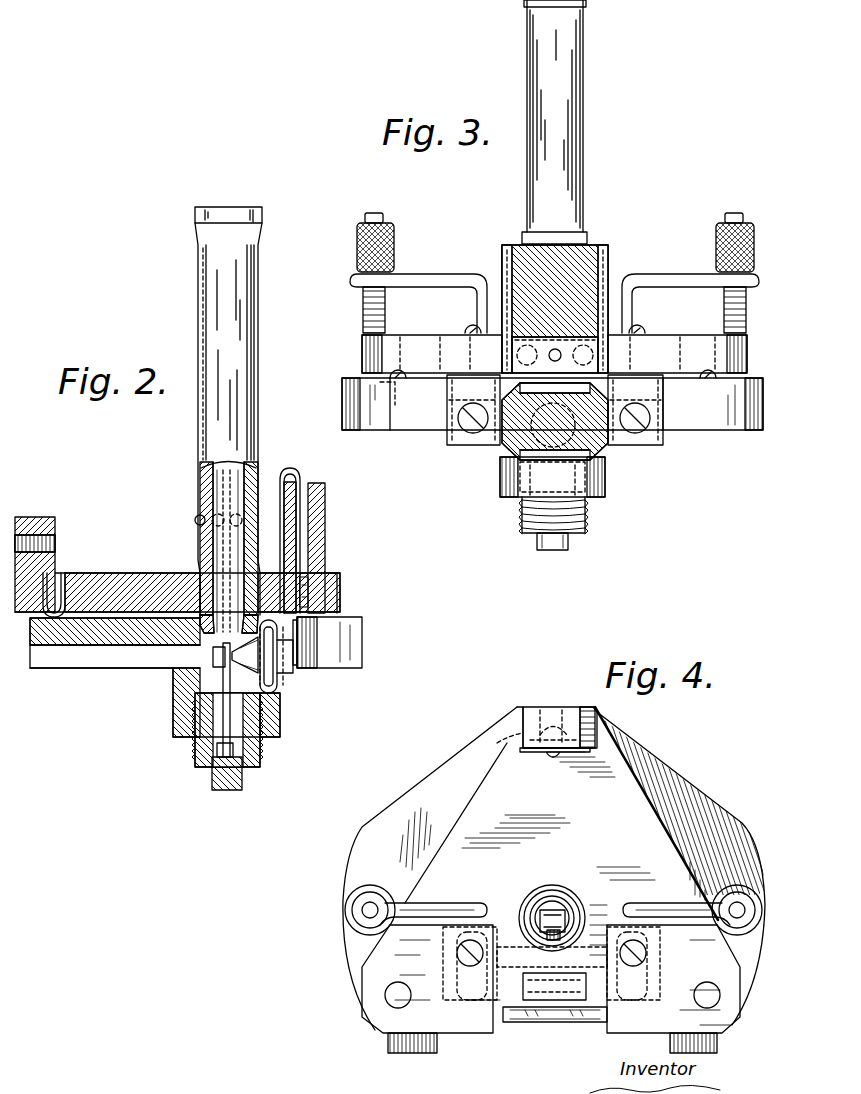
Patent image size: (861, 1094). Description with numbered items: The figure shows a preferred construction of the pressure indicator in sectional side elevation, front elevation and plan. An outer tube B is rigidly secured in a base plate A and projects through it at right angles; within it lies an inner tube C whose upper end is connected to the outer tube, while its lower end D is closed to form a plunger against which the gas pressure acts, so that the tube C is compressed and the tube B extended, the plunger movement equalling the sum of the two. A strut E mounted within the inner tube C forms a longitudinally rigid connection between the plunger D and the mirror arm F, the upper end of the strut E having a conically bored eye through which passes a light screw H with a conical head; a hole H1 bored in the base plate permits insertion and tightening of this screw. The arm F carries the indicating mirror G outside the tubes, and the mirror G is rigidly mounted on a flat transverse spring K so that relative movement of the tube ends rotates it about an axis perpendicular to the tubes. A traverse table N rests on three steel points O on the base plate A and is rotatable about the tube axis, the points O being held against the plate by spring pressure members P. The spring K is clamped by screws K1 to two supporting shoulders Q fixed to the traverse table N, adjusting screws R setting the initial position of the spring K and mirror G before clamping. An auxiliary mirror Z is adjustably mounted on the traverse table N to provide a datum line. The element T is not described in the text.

In FIG. 2, the outer tube B is at (230, 315).
In FIG. 3, the outer tube B is at (563, 123).
In FIG. 4, the outer tube B is at (537, 901).
In FIG. 2, the inner tube C is at (203, 535).
In FIG. 2, the lug block T is at (50, 517).
In FIG. 4, the lug block T is at (537, 713).
In FIG. 2, the traverse table N is at (57, 573).
In FIG. 3, the traverse table N is at (372, 360).
In FIG. 4, the traverse table N is at (607, 797).
In FIG. 2, the steel points O is at (58, 597).
In FIG. 3, the steel points O is at (403, 377).
In FIG. 4, the steel points O is at (560, 750).
In FIG. 2, the base plate A is at (63, 640).
In FIG. 3, the base plate A is at (400, 420).
In FIG. 4, the base plate A is at (395, 833).
In FIG. 2, the hole H1 is at (113, 657).
In FIG. 2, the auxiliary mirror Z is at (325, 514).
In FIG. 3, the auxiliary mirror Z is at (527, 267).
In FIG. 4, the auxiliary mirror Z is at (530, 1010).
In FIG. 2, the supporting shoulders Q is at (287, 633).
In FIG. 3, the supporting shoulders Q is at (657, 447).
In FIG. 4, the supporting shoulders Q is at (392, 940).
In FIG. 2, the screw K1 is at (300, 653).
In FIG. 3, the screw K1 is at (467, 427).
In FIG. 4, the screw K1 is at (478, 1003).
In FIG. 2, the flat transverse spring K is at (263, 660).
In FIG. 3, the flat transverse spring K is at (505, 405).
In FIG. 4, the flat transverse spring K is at (510, 950).
In FIG. 2, the indicating mirror G is at (257, 667).
In FIG. 3, the indicating mirror G is at (527, 437).
In FIG. 4, the indicating mirror G is at (583, 975).
In FIG. 2, the strut E is at (230, 727).
In FIG. 3, the strut E is at (557, 477).
In FIG. 2, the plunger D is at (210, 780).
In FIG. 3, the plunger D is at (537, 543).
In FIG. 3, the spring pressure members P is at (423, 282).
In FIG. 4, the spring pressure members P is at (430, 903).
In FIG. 3, the adjusting screws R is at (467, 332).
In FIG. 4, the adjusting screws R is at (630, 962).
In FIG. 4, the screw H is at (550, 910).
In FIG. 4, the mirror arm F is at (556, 915).